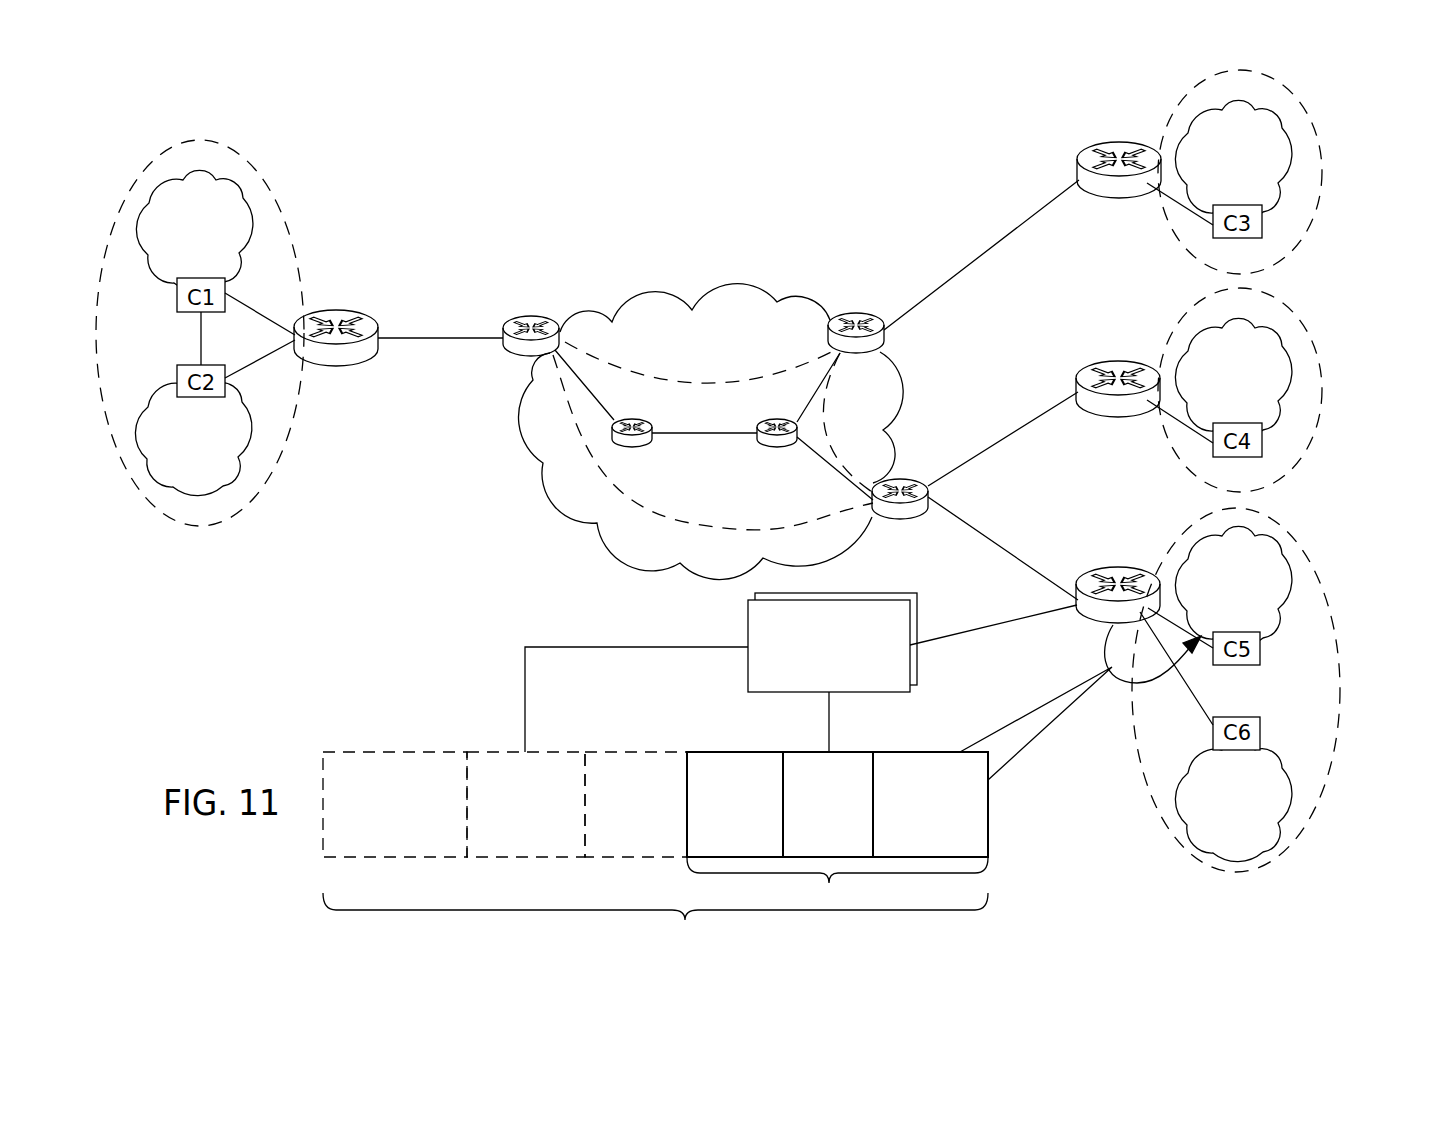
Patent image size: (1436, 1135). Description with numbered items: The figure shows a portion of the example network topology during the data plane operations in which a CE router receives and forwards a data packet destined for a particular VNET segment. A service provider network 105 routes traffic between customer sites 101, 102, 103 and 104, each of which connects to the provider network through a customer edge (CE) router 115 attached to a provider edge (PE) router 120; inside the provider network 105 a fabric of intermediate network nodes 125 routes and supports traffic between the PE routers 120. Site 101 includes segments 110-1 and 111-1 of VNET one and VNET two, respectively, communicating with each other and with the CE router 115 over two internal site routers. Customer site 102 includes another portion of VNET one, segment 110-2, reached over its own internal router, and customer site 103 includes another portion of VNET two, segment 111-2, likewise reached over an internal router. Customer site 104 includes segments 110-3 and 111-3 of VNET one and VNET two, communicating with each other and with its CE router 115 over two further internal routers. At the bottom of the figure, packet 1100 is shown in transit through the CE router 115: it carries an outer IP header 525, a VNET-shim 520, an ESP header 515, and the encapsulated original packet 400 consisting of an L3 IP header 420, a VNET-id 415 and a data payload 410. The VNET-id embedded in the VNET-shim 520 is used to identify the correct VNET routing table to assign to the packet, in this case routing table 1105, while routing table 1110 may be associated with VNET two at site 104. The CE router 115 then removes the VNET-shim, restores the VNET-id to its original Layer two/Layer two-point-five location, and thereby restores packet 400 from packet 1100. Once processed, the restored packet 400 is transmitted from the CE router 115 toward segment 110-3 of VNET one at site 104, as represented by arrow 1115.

The customer site 101 is at (228, 147).
The segment of VNET 1 110-1 is at (184, 248).
The segment of VNET 2 111-1 is at (183, 425).
The customer edge (CE) router 115 is at (342, 365).
The provider edge (PE) router 120 is at (512, 350).
The intermediate network node 125 is at (618, 447).
The service provider network 105 is at (722, 283).
The customer site 102 is at (1315, 218).
The segment of VNET 1 110-2 is at (1272, 113).
The customer site 103 is at (1318, 380).
The segment of VNET 2 111-2 is at (1272, 330).
The customer site 104 is at (1336, 620).
The segment of VNET 1 110-3 is at (1262, 522).
The segment of VNET 2 111-3 is at (1283, 775).
The arrow 1115 is at (1108, 646).
The routing table 1110 is at (910, 672).
The routing table 1105 is at (858, 692).
The outer IP header 525 is at (361, 750).
The VNET-shim 520 is at (493, 750).
The encapsulating security payload (ESP) header 515 is at (612, 750).
The L3 IP header 420 is at (710, 750).
The VNET-id 415 is at (810, 750).
The data payload 410 is at (988, 817).
The IP packet 400 is at (837, 884).
The packet 1100 is at (655, 917).